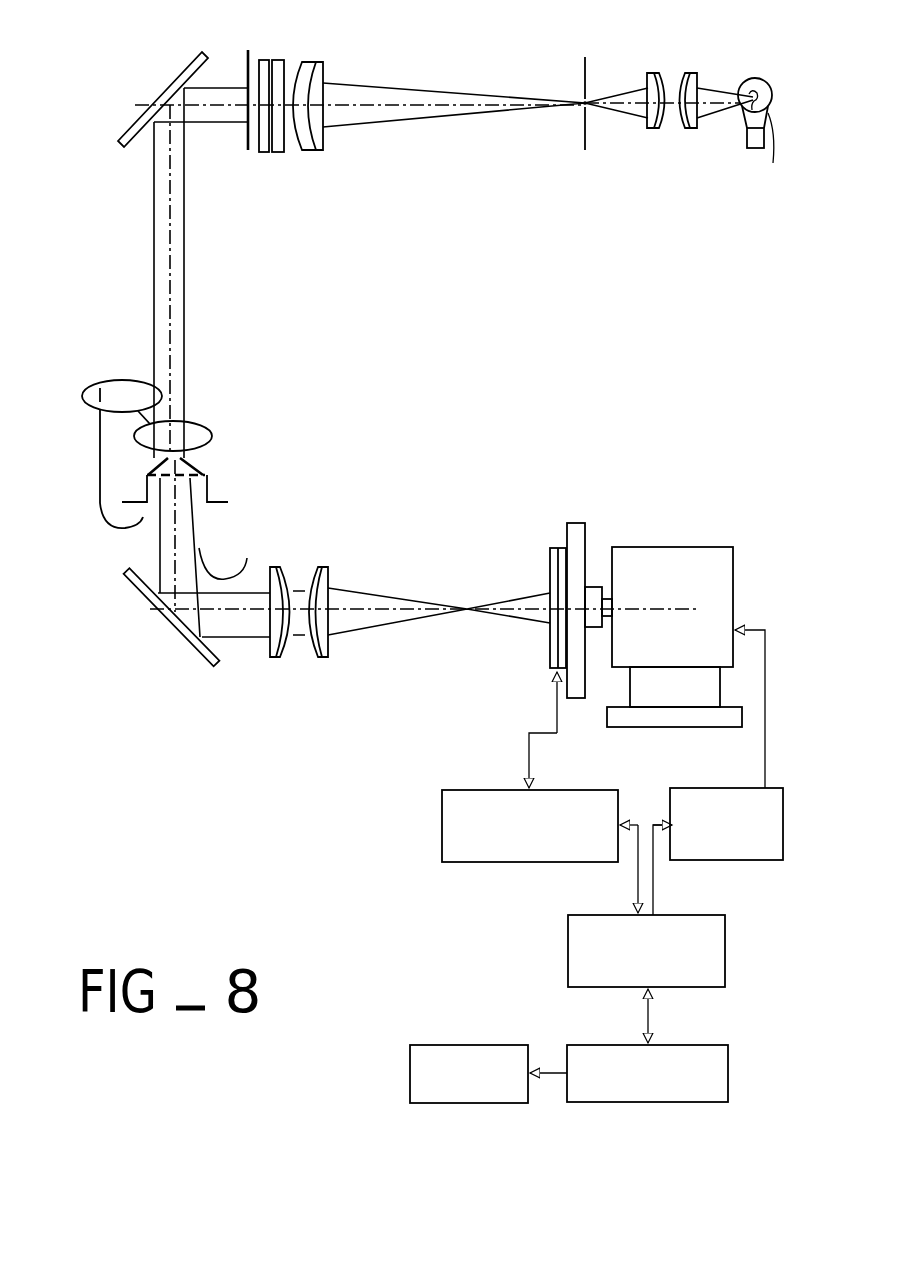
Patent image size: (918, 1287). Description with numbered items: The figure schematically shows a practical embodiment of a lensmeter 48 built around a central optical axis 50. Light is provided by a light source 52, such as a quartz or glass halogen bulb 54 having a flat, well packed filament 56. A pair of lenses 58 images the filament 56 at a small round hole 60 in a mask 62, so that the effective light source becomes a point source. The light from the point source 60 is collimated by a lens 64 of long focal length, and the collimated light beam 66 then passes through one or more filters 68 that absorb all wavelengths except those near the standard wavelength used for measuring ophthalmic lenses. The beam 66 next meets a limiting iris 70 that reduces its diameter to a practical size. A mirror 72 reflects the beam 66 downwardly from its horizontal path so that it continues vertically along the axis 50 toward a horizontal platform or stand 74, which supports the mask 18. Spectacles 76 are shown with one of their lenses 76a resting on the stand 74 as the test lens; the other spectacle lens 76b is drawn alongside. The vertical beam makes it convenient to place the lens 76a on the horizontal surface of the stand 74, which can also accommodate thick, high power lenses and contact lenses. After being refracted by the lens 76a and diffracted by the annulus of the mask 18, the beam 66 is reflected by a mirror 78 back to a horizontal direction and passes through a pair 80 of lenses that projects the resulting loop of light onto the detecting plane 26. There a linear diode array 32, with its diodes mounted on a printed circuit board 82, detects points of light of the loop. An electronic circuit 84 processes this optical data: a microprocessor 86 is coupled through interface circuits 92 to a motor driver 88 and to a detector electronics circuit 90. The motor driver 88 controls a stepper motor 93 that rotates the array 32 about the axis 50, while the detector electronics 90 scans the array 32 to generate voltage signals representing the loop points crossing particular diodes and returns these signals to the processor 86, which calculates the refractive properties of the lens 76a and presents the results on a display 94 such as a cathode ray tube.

The mask 18 is at (173, 478).
The detecting plane 26 is at (550, 553).
The linear diode array 32 is at (552, 652).
The lensmeter 48 is at (435, 244).
The optical axis 50 is at (448, 100).
The light source 52 is at (740, 129).
The bulb 54 is at (762, 155).
The filament 56 is at (755, 78).
The pair of lenses 58 is at (697, 63).
The small round hole 60 is at (583, 105).
The mask 62 is at (588, 130).
The lens 64 is at (318, 62).
The collimated light beam 66 is at (213, 123).
The filters 68 is at (257, 52).
The limiting iris 70 is at (248, 133).
The mirror 72 is at (135, 120).
The stand 74 is at (207, 487).
The spectacles 76 is at (115, 372).
The ophthalmic lens 76a is at (207, 425).
The sample holder side disc 76b is at (87, 408).
The mirror 78 is at (140, 598).
The pair of lenses 80 is at (270, 667).
The printed circuit board 82 is at (572, 523).
The electronic circuit 84 is at (744, 518).
The microprocessor 86 is at (707, 1043).
The motor driver 88 is at (718, 785).
The detector electronics circuit 90 is at (442, 820).
The interface circuits 92 is at (568, 952).
The stepper motor 93 is at (670, 547).
The display 94 is at (477, 1043).